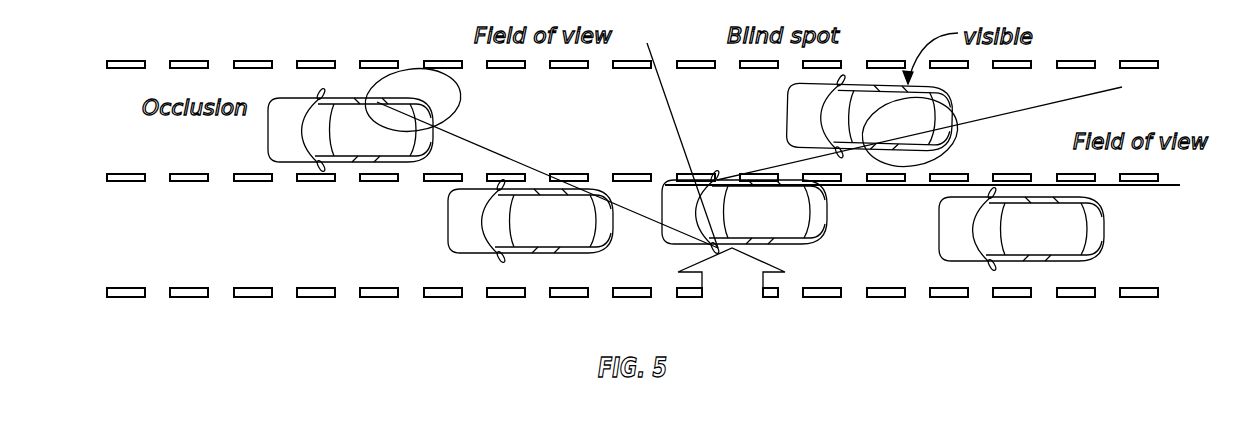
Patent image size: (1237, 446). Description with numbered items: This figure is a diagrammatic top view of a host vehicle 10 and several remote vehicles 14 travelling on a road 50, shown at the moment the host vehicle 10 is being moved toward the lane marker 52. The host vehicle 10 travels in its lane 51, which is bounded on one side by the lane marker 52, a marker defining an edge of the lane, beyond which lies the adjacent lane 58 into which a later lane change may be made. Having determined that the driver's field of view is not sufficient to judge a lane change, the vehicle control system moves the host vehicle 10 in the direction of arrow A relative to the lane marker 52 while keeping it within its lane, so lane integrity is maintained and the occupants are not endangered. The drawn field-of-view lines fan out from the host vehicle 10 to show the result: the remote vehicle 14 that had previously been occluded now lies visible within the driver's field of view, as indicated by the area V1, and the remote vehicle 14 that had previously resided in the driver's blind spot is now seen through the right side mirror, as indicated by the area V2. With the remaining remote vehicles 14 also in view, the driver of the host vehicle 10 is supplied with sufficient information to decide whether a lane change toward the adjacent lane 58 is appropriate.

The host vehicle 10 is at (829, 215).
The remote vehicles 14 is at (357, 162).
The road 50 is at (285, 318).
The lane 51 is at (1150, 273).
The lane marker 52 is at (1157, 178).
The adjacent lane 58 is at (1150, 105).
The arrow A is at (736, 280).
The area V1 is at (416, 70).
The area V2 is at (954, 150).